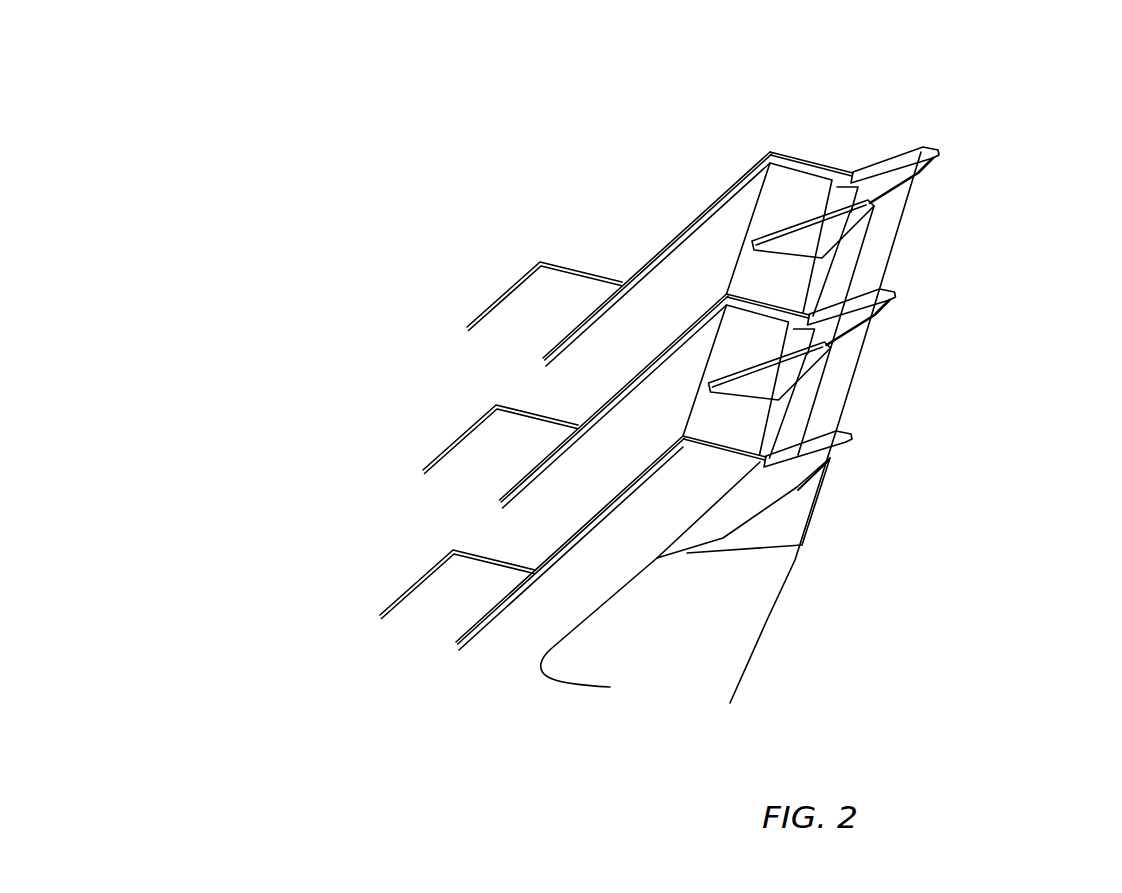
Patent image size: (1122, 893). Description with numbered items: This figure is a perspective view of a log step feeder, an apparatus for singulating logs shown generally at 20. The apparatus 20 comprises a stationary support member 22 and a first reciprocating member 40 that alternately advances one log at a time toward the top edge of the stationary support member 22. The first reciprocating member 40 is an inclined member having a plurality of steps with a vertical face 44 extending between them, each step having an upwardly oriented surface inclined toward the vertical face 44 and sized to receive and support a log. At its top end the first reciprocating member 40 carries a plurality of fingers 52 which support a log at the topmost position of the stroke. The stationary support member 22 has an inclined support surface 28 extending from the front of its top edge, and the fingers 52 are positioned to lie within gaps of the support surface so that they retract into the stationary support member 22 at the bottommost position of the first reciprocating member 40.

The apparatus for singulating logs 20 is at (775, 94).
The stationary support member 22 is at (773, 387).
The inclined support surface 28 is at (832, 212).
The first reciprocating member 40 is at (703, 247).
The vertical face 44 is at (648, 286).
The fingers 52 is at (937, 150).